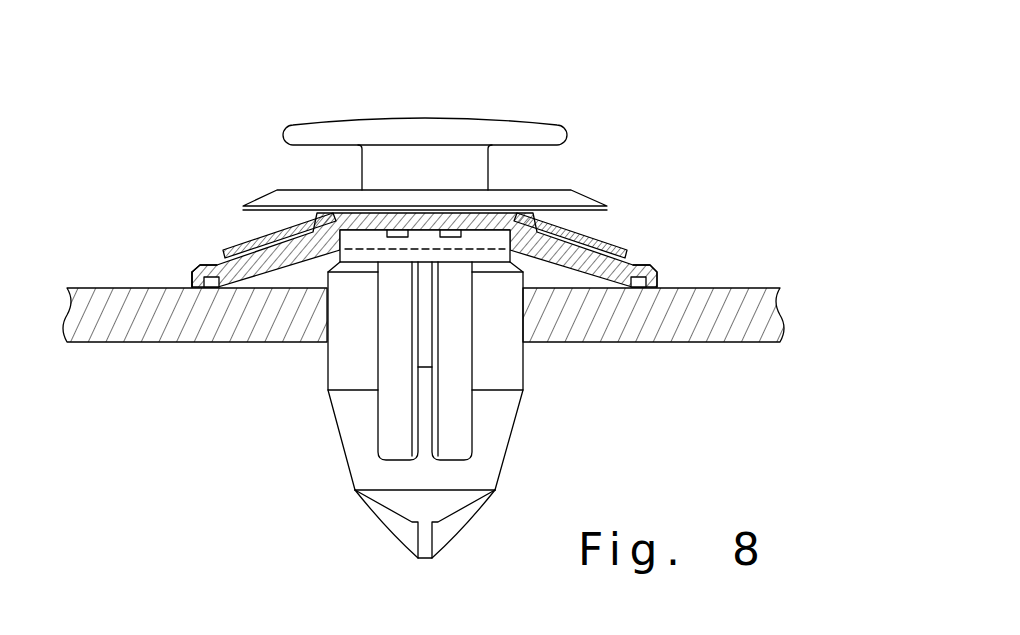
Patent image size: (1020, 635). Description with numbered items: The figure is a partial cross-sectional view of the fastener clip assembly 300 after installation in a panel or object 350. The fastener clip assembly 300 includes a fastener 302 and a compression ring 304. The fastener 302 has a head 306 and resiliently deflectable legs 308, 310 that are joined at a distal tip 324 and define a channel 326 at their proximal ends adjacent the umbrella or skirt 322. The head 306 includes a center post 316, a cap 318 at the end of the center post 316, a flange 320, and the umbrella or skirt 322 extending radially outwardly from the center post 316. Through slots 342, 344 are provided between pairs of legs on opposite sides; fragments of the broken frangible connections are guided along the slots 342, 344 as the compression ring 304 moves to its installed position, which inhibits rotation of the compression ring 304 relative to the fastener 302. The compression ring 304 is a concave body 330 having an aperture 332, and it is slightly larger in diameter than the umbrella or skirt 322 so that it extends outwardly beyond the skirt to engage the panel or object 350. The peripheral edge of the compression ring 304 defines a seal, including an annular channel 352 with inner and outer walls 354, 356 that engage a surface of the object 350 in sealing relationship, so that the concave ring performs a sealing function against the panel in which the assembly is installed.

The fastener clip assembly 300 is at (222, 121).
The fastener 302 is at (420, 98).
The compression ring 304 is at (673, 255).
The head 306 is at (598, 151).
The resiliently deflectable leg 308 is at (342, 372).
The resiliently deflectable leg 310 is at (508, 367).
The center post 316 is at (362, 170).
The cap 318 is at (312, 127).
The flange 320 is at (255, 200).
The umbrella or skirt 322 is at (235, 253).
The distal tip 324 is at (425, 562).
The channel 326 is at (522, 258).
The concave body 330 is at (197, 263).
The aperture 332 is at (552, 233).
The through slot 342 is at (395, 438).
The through slot 344 is at (457, 438).
The panel or object 350 is at (758, 295).
The annular channel 352 is at (643, 287).
The inner wall 354 is at (220, 290).
The outer wall 356 is at (197, 290).